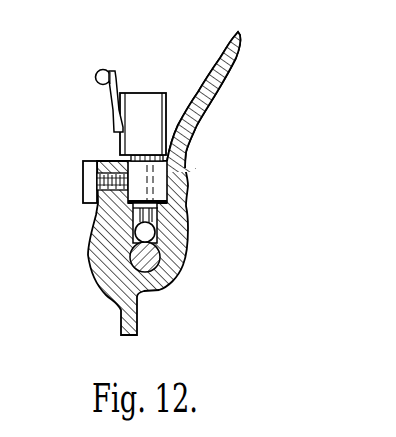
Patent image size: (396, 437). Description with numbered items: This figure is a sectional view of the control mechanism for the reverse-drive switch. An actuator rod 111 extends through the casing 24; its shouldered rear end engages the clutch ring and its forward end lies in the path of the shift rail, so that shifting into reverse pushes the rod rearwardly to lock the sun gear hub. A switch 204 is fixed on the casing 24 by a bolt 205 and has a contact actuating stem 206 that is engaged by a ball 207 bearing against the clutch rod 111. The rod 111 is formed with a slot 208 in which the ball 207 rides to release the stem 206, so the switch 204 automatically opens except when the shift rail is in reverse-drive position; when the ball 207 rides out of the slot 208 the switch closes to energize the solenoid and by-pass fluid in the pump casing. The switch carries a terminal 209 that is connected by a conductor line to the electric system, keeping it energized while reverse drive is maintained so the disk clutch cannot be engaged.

The actuator rod 111 is at (176, 273).
The casing 24 is at (196, 114).
The switch 204 is at (150, 107).
The bolt 205 is at (84, 182).
The contact actuating stem 206 is at (177, 211).
The ball 207 is at (155, 229).
The slot 208 is at (138, 242).
The terminal 209 is at (107, 102).